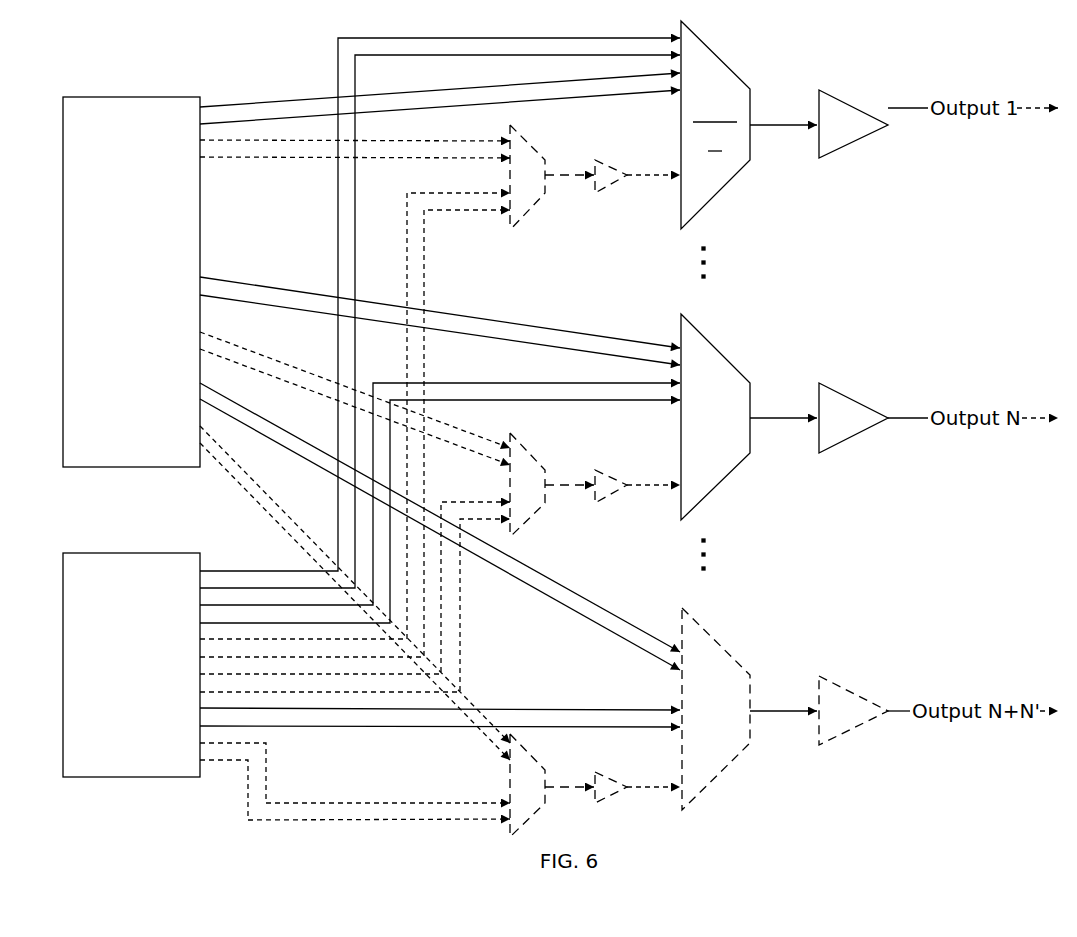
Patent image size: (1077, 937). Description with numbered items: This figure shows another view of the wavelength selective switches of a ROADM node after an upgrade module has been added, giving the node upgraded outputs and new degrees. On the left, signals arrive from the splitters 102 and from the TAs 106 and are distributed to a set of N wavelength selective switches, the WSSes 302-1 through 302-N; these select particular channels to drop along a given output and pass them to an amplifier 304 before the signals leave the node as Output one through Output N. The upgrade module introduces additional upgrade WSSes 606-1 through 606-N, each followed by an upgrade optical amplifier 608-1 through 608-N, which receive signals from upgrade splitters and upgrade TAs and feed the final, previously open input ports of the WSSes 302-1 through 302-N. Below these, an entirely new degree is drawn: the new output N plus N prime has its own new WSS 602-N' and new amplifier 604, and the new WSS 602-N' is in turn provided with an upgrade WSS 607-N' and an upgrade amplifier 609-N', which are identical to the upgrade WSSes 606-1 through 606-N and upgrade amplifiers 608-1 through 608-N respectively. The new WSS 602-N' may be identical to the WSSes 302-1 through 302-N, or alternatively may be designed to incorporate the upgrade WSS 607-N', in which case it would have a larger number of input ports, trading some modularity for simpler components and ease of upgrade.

The splitters 102 is at (113, 321).
The transmit amplifiers (TAs) 106 is at (113, 690).
The 2N×1 WSS 302-1 is at (757, 59).
The 2N×1 WSS 302-N is at (752, 355).
The amplifier 304 is at (827, 136).
The new WSS 602-N' is at (766, 709).
The new amplifier 604 is at (827, 722).
The upgrade WSS 606-1 is at (508, 238).
The optical amplifier 608-1 is at (594, 199).
The upgrade WSS 606-N is at (578, 438).
The optical amplifier 608-N is at (612, 507).
The upgrade WSS 607-N' is at (579, 785).
The upgrade amplifier 609-N' is at (645, 807).